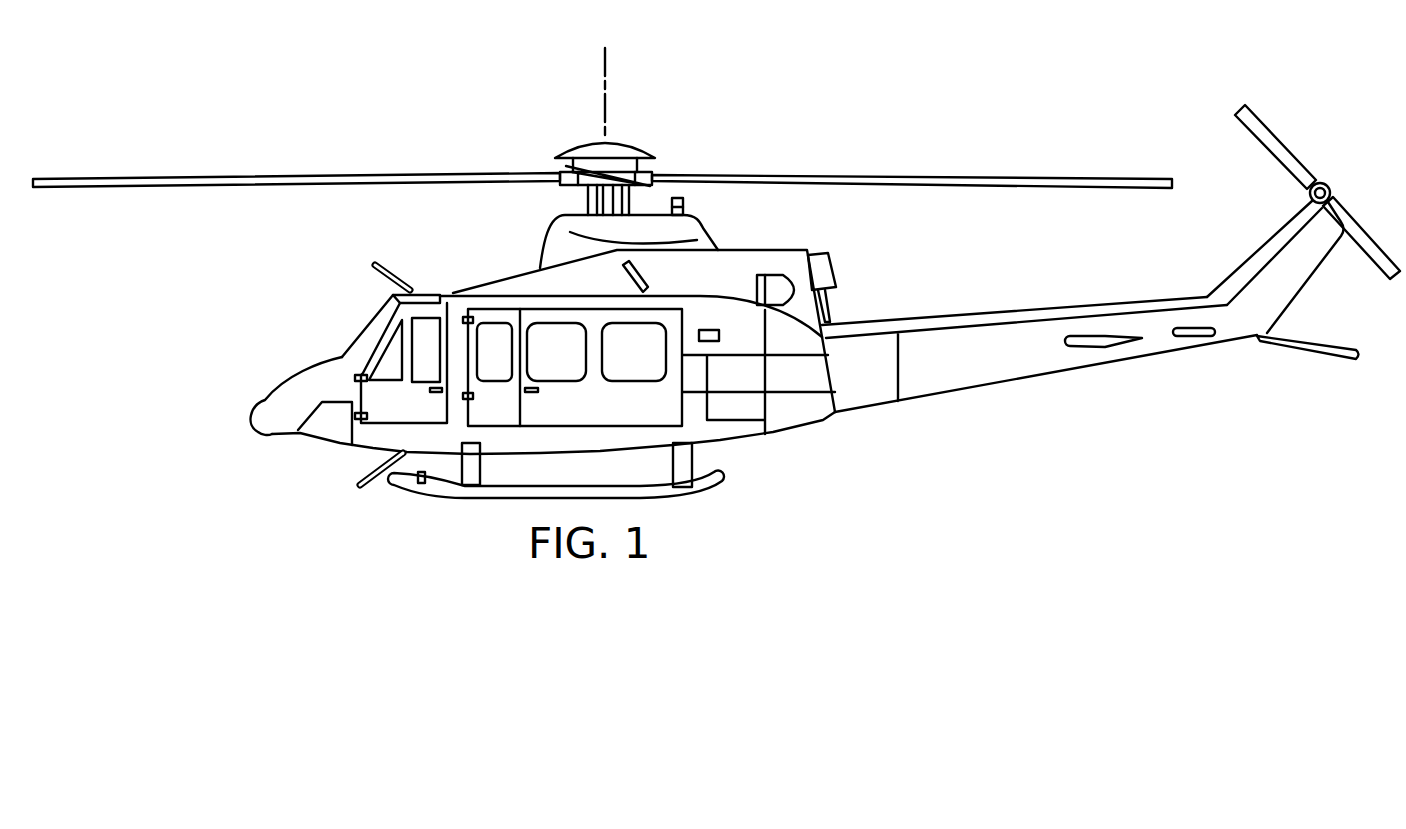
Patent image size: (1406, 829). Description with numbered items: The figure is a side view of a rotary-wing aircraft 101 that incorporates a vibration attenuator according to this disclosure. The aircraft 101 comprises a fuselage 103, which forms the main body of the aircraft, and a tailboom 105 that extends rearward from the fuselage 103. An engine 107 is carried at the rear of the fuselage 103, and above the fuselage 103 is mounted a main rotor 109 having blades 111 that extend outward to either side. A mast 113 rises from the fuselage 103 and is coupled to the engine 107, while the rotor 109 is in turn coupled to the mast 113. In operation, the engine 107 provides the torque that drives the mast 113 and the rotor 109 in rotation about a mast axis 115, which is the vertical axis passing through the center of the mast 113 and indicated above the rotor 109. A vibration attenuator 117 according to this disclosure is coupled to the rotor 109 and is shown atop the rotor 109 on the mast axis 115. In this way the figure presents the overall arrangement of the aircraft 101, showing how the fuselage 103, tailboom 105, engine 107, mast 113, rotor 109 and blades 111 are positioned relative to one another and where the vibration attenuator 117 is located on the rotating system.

The rotary-wing aircraft 101 is at (955, 66).
The fuselage 103 is at (792, 436).
The tailboom 105 is at (1015, 386).
The engine 107 is at (840, 262).
The main rotor 109 is at (762, 165).
The blades 111 is at (860, 172).
The mast 113 is at (583, 190).
The mast axis 115 is at (608, 64).
The vibration attenuator 117 is at (578, 138).